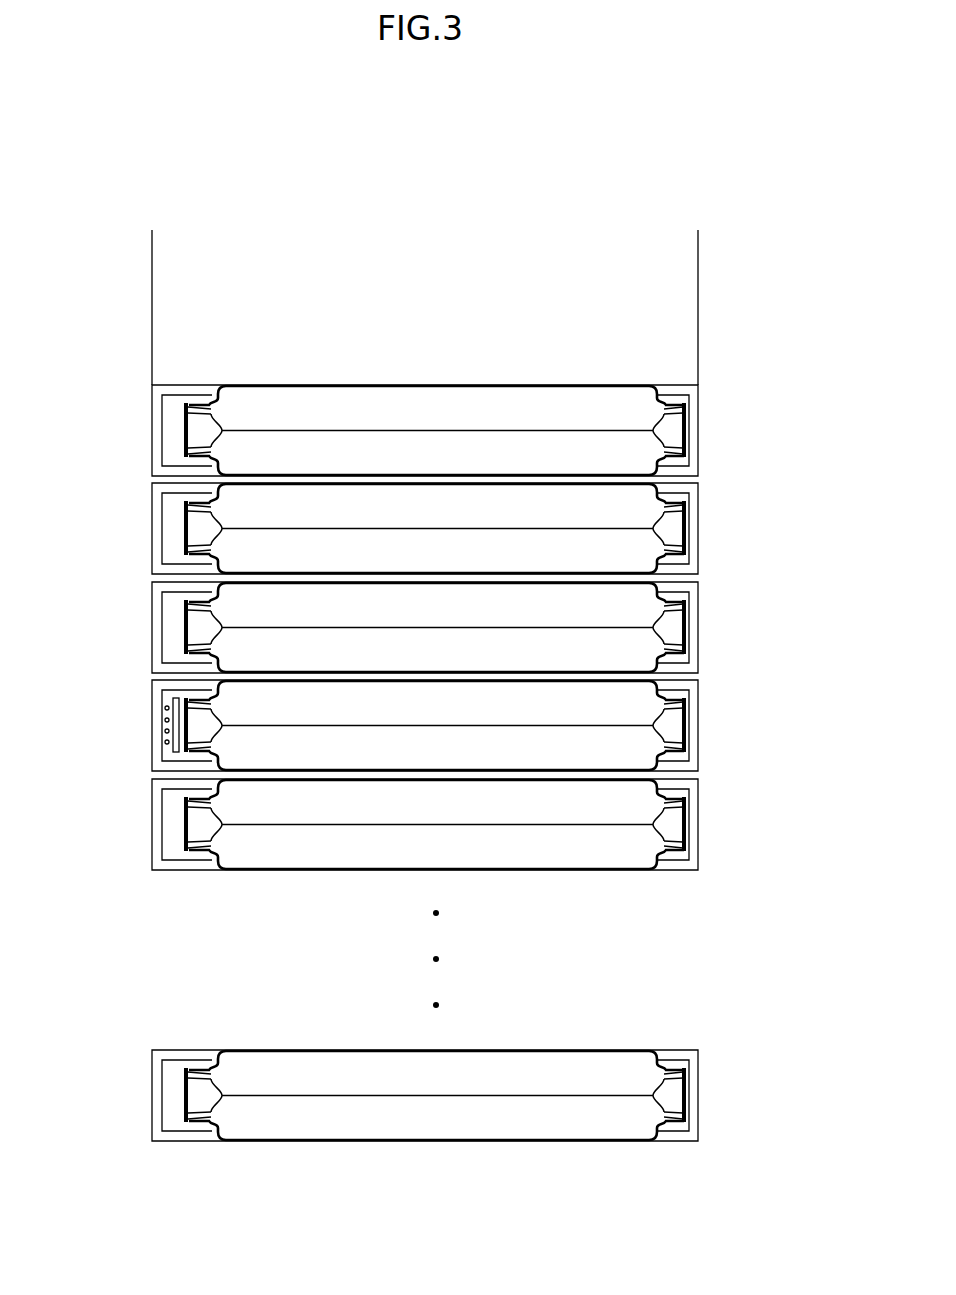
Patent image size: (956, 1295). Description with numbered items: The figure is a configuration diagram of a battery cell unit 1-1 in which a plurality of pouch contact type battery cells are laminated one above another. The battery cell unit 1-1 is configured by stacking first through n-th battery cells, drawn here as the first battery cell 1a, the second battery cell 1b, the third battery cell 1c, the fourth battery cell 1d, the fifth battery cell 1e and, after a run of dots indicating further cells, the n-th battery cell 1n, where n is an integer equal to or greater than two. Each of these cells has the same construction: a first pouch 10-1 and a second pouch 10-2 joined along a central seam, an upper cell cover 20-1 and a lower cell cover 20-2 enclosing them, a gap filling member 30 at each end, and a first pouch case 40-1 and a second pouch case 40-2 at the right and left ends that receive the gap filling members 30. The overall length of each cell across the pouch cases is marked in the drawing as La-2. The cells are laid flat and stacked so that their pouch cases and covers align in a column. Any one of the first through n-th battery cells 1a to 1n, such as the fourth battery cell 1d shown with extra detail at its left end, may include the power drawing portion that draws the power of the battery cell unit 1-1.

The battery cell unit 1-1 is at (731, 375).
The first battery cell 1a is at (122, 385).
The second battery cell 1b is at (152, 529).
The third battery cell 1c is at (152, 628).
The fourth battery cell 1d is at (152, 726).
The fifth battery cell 1e is at (152, 825).
The n-th battery cell 1n is at (152, 1096).
The gap filling member 30 is at (185, 425).
The first pouch 10-1 is at (320, 407).
The second pouch 10-2 is at (350, 455).
The upper cell cover 20-1 is at (481, 388).
The lower cell cover 20-2 is at (527, 472).
The first pouch case 40-1 is at (668, 385).
The second pouch case 40-2 is at (181, 384).
The cell length dimension La-2 is at (698, 256).